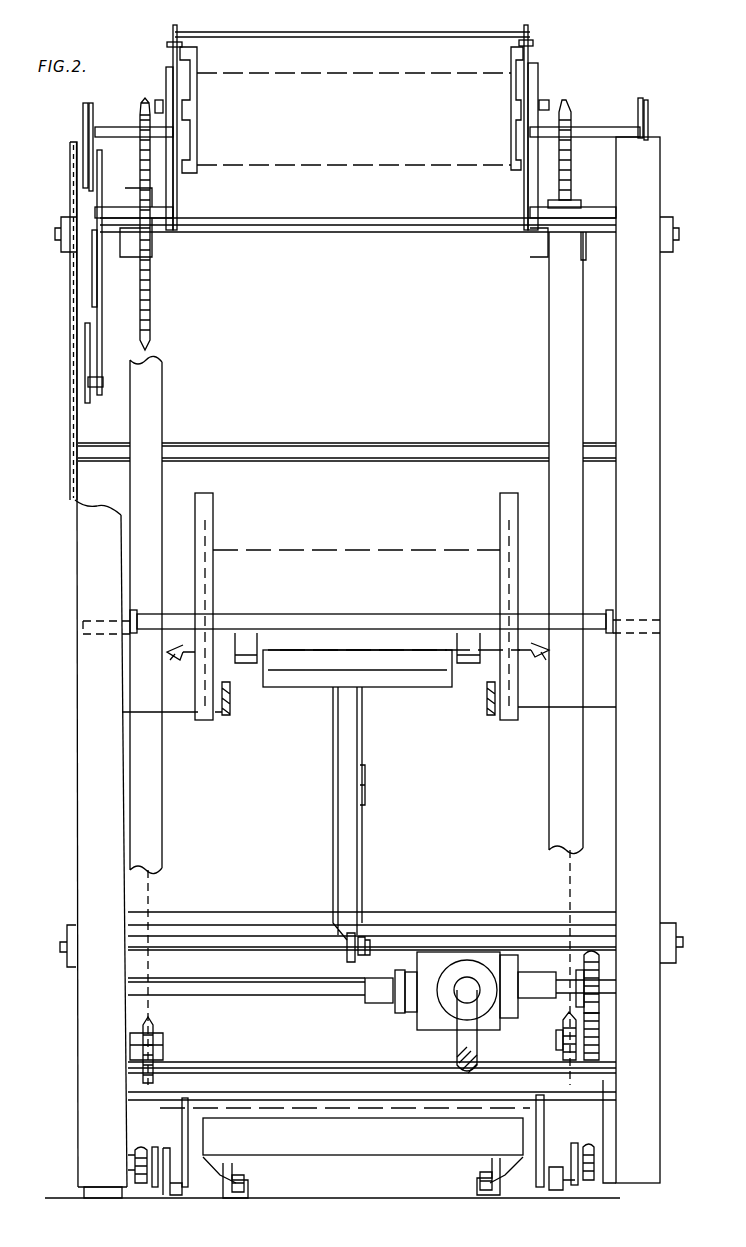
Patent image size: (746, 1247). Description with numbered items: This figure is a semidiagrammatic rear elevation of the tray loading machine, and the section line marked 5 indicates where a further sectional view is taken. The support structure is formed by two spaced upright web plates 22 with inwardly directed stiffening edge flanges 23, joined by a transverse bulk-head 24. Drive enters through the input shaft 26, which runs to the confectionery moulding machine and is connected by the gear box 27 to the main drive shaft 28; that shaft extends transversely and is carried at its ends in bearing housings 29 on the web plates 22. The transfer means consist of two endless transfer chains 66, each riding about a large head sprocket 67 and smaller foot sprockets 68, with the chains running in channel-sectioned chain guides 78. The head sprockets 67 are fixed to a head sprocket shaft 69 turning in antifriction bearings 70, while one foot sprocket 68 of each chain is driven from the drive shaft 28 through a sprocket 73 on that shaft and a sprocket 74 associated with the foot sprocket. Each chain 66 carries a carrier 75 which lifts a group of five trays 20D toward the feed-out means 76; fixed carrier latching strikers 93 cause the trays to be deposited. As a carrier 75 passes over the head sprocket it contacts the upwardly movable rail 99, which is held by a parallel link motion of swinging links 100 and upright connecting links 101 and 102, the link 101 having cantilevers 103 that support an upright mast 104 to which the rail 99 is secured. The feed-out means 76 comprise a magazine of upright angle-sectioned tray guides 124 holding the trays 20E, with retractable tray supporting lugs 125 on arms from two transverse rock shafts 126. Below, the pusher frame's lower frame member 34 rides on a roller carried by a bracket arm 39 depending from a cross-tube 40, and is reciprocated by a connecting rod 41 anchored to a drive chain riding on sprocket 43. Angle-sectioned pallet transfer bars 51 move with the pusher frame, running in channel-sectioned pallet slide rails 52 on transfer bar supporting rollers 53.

The section line 5- 5 is at (650, 28).
The upright web plate 22 is at (76, 419).
The stiffening edge flange 23 is at (648, 413).
The antifriction bearing 70 is at (62, 248).
The bearing housing 29 is at (66, 926).
The trays 20D is at (352, 98).
The trays 20E is at (384, 540).
The carrier 75 is at (149, 72).
The upwardly movable rail 99 is at (182, 40).
The upright connecting link 101 is at (95, 125).
The cantilever 103 is at (115, 135).
The swinging link 100 is at (83, 122).
The upright connecting link 102 is at (97, 312).
The upright mast 104 is at (168, 194).
The head sprocket 67 is at (150, 316).
The head sprocket shaft 69 is at (353, 232).
The chain guide 78 is at (152, 404).
The transfer chain 66 is at (150, 889).
The tray guide 124 is at (213, 513).
The rock shaft 126 is at (524, 612).
The carrier latching striker 93 is at (180, 667).
The retractable tray supporting lug 125 is at (248, 665).
The feed-out means 76 is at (302, 726).
The transverse bulk-head 24 is at (428, 801).
The cross-tube 40 is at (137, 1097).
The main drive shaft 28 is at (255, 995).
The gear box 27 is at (425, 1025).
The input shaft 26 is at (477, 1045).
The sprocket 73 is at (600, 970).
The sprocket 74 is at (600, 1043).
The foot sprocket 68 is at (155, 1032).
The bracket arm 39 is at (186, 1188).
The lower frame member 34 is at (170, 1196).
The connecting rod 41 is at (150, 1185).
The sprocket 43 is at (133, 1162).
The pallet slide rail 52 is at (228, 1198).
The transfer bar supporting roller 53 is at (240, 1192).
The pallet transfer bar 51 is at (250, 1170).